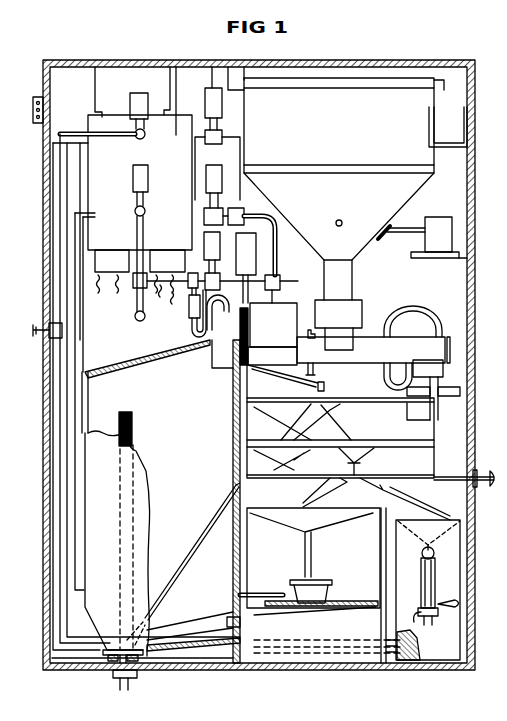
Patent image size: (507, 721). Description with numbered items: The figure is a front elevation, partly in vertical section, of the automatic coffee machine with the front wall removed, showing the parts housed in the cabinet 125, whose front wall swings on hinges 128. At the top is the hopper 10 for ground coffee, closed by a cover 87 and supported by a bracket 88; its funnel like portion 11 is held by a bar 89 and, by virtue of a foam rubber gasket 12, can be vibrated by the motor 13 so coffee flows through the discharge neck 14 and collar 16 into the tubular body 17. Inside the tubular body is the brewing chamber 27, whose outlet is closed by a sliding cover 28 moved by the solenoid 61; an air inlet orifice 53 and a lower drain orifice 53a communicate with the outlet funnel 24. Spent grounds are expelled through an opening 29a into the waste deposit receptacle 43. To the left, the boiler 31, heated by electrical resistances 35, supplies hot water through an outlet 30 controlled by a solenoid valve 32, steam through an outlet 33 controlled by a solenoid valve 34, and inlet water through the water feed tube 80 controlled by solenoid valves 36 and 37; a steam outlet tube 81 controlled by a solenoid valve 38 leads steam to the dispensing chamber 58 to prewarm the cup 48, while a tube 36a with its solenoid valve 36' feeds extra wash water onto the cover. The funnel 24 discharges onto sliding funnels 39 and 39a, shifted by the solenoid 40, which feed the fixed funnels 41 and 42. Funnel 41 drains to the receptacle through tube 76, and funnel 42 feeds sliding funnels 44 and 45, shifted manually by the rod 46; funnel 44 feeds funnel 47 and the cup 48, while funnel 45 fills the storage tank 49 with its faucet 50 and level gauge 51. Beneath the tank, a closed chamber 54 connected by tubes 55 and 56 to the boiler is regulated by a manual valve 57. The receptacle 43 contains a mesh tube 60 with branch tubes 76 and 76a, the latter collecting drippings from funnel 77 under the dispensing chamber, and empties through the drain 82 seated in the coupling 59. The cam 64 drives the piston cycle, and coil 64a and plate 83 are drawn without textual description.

The hopper 10 is at (342, 131).
The funnel like portion 11 is at (328, 213).
The foam rubber gasket 12 is at (378, 170).
The motor 13 is at (437, 225).
The discharge neck 14 is at (348, 289).
The collar 16 is at (315, 314).
The tubular body 17 is at (398, 361).
The outlet funnel 24 is at (324, 389).
The brewing chamber 27 is at (276, 321).
The cover 28 is at (241, 340).
The opening 29a is at (209, 357).
The outlet 30 is at (204, 209).
The boiler 31 is at (120, 171).
The solenoid valve 32 is at (206, 177).
The outlet 33 is at (207, 143).
The solenoid valve 34 is at (206, 106).
The heaters 35 is at (110, 268).
The solenoid valve 36 is at (222, 258).
The solenoid valve 36' is at (180, 312).
The tube 36a is at (214, 312).
The solenoid valve 37 is at (133, 190).
The solenoid valve 38 is at (131, 107).
The sliding funnel 39 is at (271, 403).
The sliding funnel 39a is at (330, 412).
The solenoid 40 is at (421, 404).
The fixed funnel 41 is at (300, 455).
The fixed funnel 42 is at (366, 455).
The waste deposit receptacle 43 is at (176, 536).
The sliding funnel 44 is at (332, 489).
The sliding funnel 45 is at (392, 488).
The rod 46 is at (463, 478).
The funnel 47 is at (322, 525).
The cup 48 is at (322, 590).
The storage tank 49 is at (416, 568).
The faucet 50 is at (430, 605).
The level gauge 51 is at (437, 578).
The air inlet orifice 53 is at (311, 338).
The lower drain orifice 53a is at (320, 372).
The closed chamber 54 is at (452, 658).
The tube 55 is at (346, 653).
The tube 56 is at (318, 648).
The manual valve 57 is at (63, 330).
The dispensing chamber 58 is at (288, 551).
The coupling 59 is at (129, 680).
The mesh tube 60 is at (133, 431).
The solenoid 61 is at (257, 256).
The cam 64 is at (427, 327).
The coil tube 64a is at (417, 309).
The tube 76 is at (215, 500).
The tube 76a is at (200, 626).
The funnel 77 is at (281, 613).
The water feed tube 80 is at (142, 321).
The steam outlet tube 81 is at (78, 132).
The drain 82 is at (110, 646).
The bottom plate 83 is at (193, 650).
The cover 87 is at (437, 82).
The bracket 88 is at (443, 146).
The bar 89 is at (342, 222).
The cabinet 125 is at (151, 62).
The hinges 128 is at (33, 101).